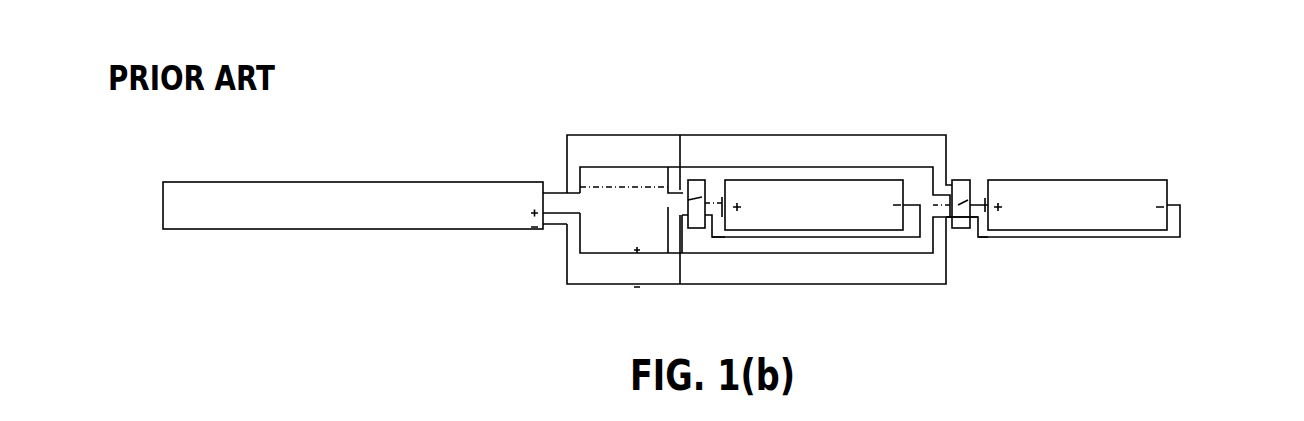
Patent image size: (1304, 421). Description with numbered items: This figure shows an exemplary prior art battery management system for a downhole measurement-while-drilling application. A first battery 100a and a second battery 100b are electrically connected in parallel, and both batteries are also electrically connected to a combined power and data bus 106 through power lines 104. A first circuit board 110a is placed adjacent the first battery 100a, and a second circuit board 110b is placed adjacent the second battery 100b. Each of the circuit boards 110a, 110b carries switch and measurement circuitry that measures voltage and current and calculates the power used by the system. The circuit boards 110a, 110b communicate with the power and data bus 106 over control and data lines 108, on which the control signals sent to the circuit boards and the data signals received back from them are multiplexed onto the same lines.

The power lines 104 is at (787, 257).
The combined power and data bus 106 is at (278, 170).
The control and data lines 108 is at (678, 188).
The first battery 100a is at (818, 192).
The second battery 100b is at (1138, 188).
The first circuit board 110a is at (702, 200).
The second circuit board 110b is at (968, 205).